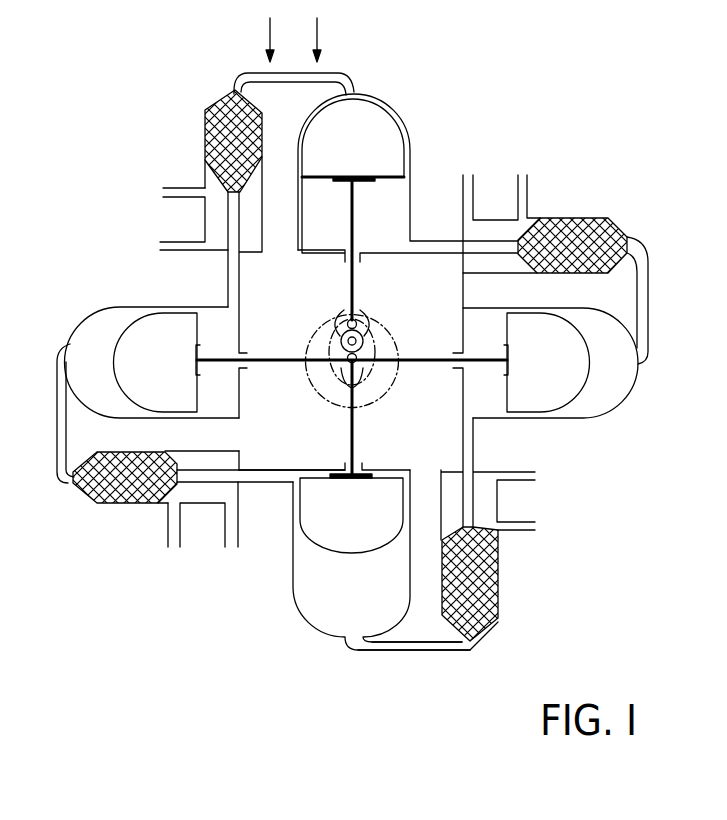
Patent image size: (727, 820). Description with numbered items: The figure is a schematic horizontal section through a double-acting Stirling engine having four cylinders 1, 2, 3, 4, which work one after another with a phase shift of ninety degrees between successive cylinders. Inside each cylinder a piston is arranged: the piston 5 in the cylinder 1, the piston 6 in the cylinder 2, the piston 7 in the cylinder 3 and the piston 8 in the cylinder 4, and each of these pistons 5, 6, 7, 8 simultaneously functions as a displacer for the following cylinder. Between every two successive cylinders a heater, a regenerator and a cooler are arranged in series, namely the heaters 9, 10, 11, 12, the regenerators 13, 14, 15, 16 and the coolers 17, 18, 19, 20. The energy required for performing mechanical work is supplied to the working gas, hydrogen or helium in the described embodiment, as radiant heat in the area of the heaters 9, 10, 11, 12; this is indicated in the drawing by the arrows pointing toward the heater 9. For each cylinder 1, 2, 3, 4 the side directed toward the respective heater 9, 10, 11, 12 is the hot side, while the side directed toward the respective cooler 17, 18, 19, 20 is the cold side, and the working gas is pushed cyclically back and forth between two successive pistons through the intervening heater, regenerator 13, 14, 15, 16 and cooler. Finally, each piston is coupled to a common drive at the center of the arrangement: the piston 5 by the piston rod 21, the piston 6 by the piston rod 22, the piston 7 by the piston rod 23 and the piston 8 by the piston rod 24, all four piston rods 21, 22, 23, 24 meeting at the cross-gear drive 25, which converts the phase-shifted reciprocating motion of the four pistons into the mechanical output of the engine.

The cylinder 1 is at (405, 110).
The cylinder 2 is at (605, 387).
The cylinder 3 is at (323, 623).
The cylinder 4 is at (92, 347).
The piston 5 is at (360, 118).
The piston 6 is at (543, 392).
The piston 7 is at (366, 530).
The piston 8 is at (147, 345).
The heater 9 is at (243, 72).
The heater 10 is at (648, 297).
The heater 11 is at (410, 648).
The heater 12 is at (62, 425).
The regenerator 13 is at (575, 243).
The regenerator 14 is at (470, 578).
The regenerator 15 is at (123, 478).
The regenerator 16 is at (232, 143).
The cooler 17 is at (497, 190).
The cooler 18 is at (513, 500).
The cooler 19 is at (205, 525).
The cooler 20 is at (187, 223).
The piston rod 21 is at (353, 210).
The piston rod 22 is at (412, 365).
The piston rod 23 is at (348, 445).
The piston rod 24 is at (276, 357).
The cross-gear drive 25 is at (398, 343).